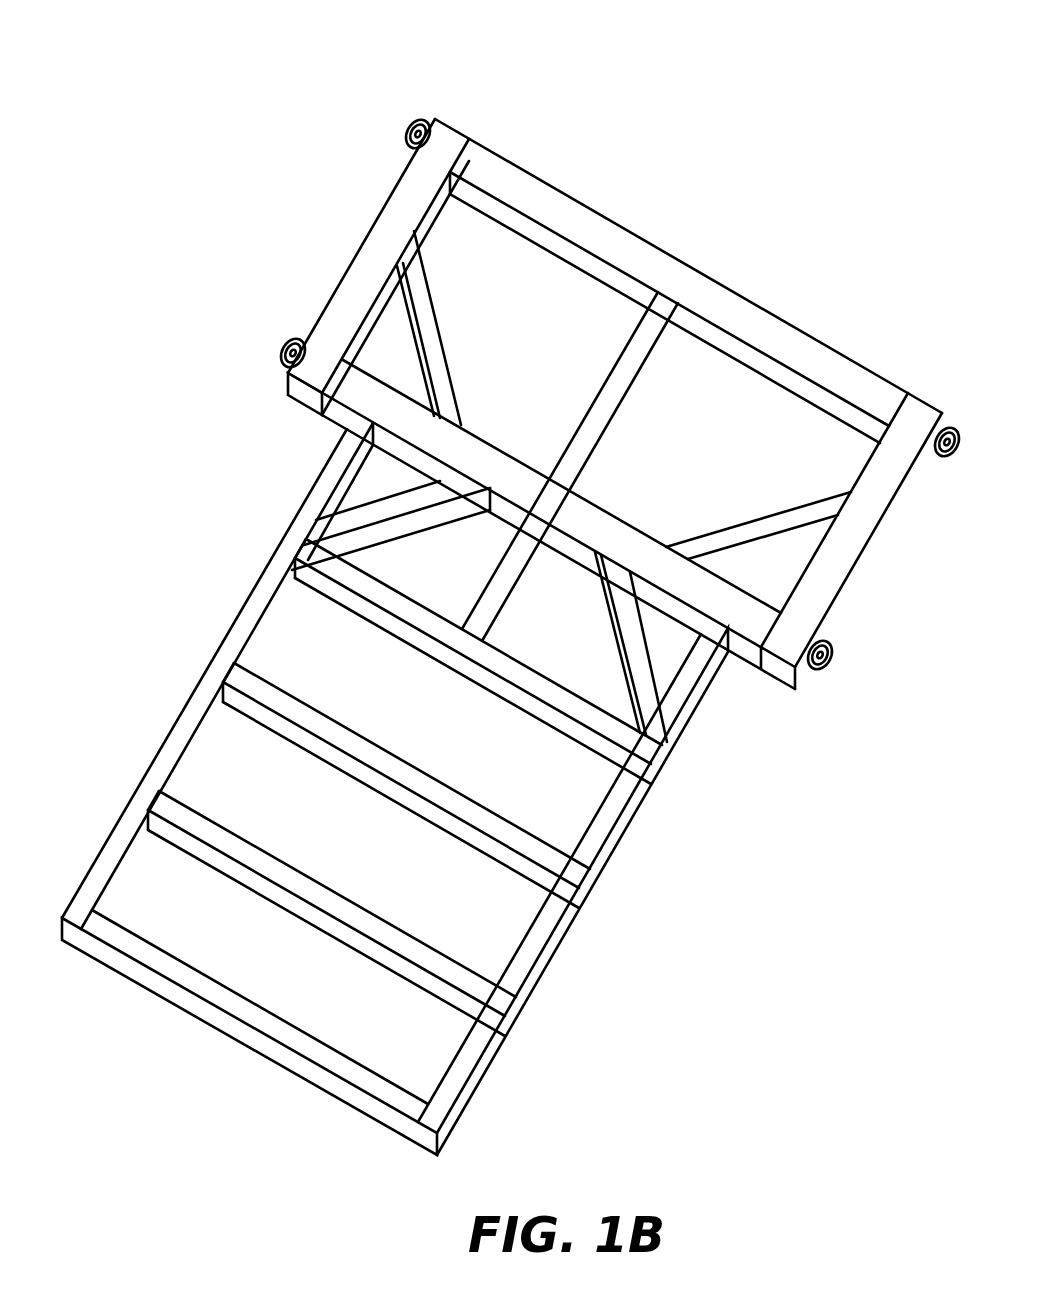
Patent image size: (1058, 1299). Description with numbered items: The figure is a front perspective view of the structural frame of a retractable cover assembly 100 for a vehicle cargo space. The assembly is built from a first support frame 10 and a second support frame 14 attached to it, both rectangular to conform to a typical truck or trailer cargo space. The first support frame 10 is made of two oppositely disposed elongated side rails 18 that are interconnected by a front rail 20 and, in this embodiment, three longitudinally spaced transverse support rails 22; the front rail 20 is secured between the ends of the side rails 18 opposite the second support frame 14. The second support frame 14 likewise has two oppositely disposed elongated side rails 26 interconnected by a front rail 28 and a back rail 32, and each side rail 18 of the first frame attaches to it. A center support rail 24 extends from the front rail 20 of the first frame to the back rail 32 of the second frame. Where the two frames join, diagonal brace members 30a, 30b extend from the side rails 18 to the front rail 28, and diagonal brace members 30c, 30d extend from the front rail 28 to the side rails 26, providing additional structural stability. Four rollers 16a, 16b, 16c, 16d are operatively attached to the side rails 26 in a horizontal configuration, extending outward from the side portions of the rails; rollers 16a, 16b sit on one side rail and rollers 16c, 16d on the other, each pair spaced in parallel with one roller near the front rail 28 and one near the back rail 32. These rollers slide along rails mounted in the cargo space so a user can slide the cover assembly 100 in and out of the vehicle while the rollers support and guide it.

The retractable cover assembly 100 is at (412, 60).
The first support frame 10 is at (99, 757).
The second support frame 14 is at (260, 218).
The roller 16a is at (826, 672).
The roller 16b is at (940, 468).
The roller 16c is at (283, 353).
The roller 16d is at (408, 130).
The side rail 18 is at (205, 685).
The front rail 20 is at (245, 1015).
The transverse support rail 22 is at (533, 695).
The center support rail 24 is at (625, 388).
The side rail 26 is at (357, 278).
The front rail 28 is at (350, 393).
The diagonal brace member 30a is at (398, 502).
The diagonal brace member 30b is at (602, 616).
The diagonal brace member 30c is at (430, 343).
The diagonal brace member 30d is at (765, 522).
The back rail 32 is at (603, 232).